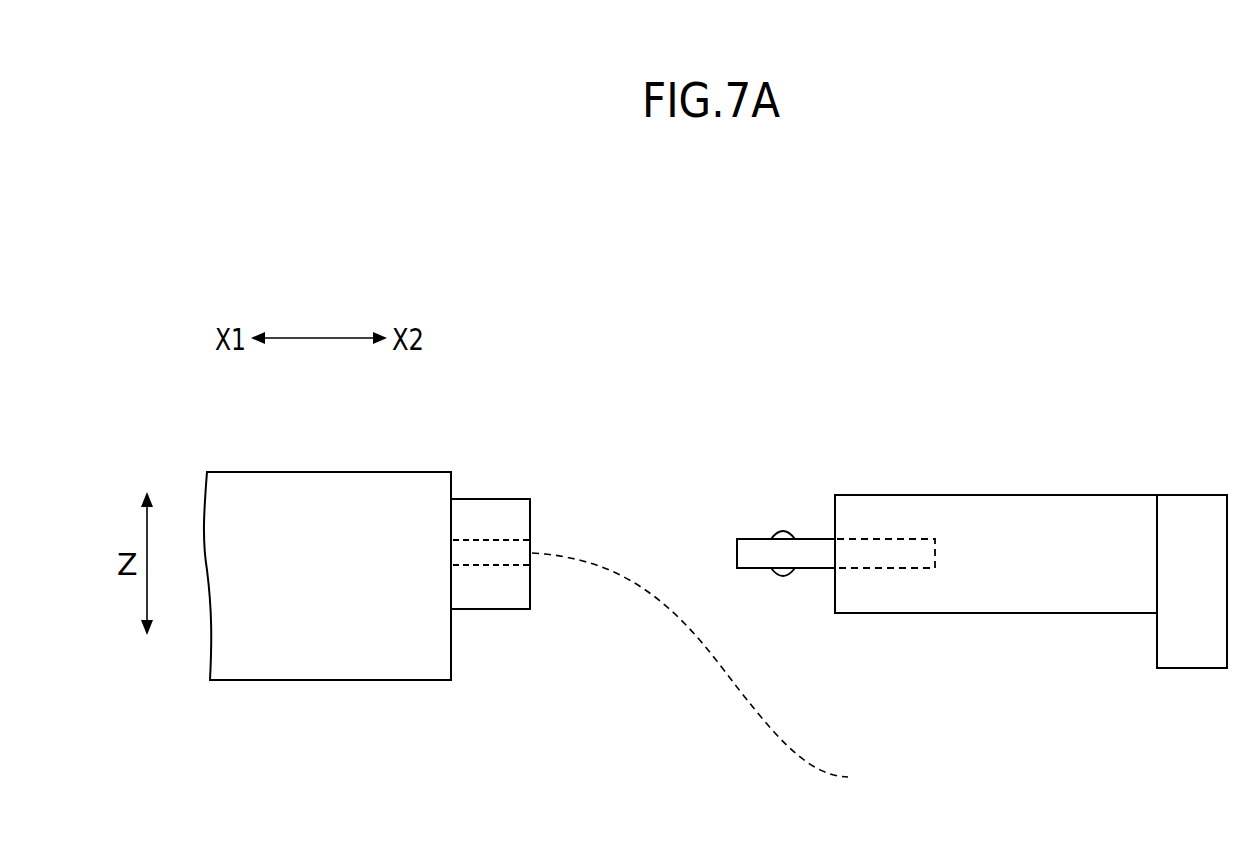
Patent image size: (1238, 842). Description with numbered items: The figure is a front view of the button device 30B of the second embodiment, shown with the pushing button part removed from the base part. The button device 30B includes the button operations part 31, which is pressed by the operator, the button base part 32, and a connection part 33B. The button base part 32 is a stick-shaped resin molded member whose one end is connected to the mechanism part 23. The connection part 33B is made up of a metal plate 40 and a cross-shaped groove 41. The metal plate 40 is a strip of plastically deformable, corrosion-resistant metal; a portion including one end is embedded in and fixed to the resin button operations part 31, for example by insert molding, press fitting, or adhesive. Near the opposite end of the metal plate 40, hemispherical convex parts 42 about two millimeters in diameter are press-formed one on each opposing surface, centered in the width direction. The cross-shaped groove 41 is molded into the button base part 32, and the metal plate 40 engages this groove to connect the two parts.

The button device 30B is at (187, 255).
The mechanism part 23 is at (320, 668).
The button base part 32 is at (487, 492).
The button operations part 31 is at (1067, 492).
The metal plate 40 is at (813, 555).
The cross-shaped groove 41 is at (706, 673).
The convex parts 42 is at (782, 531).
The connection part 33B is at (890, 690).